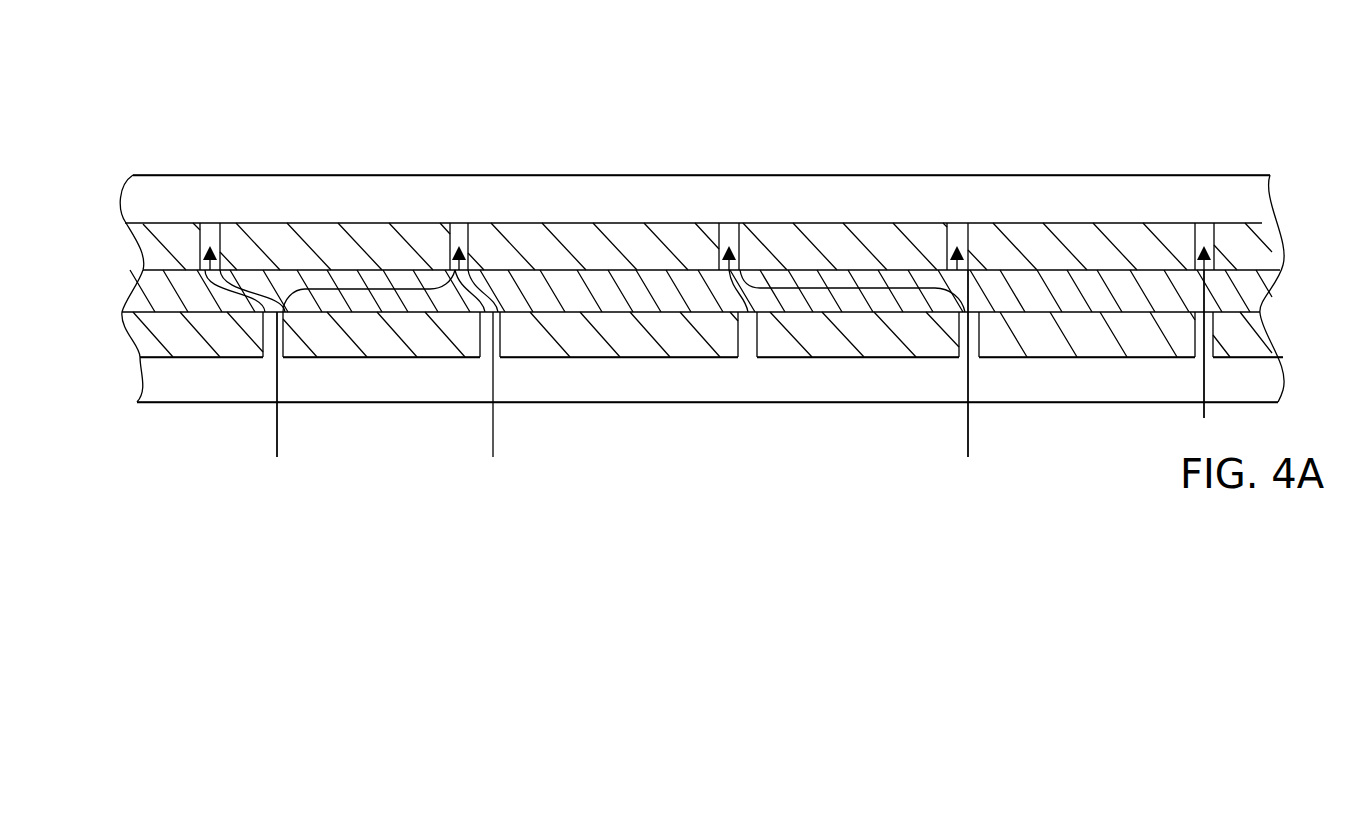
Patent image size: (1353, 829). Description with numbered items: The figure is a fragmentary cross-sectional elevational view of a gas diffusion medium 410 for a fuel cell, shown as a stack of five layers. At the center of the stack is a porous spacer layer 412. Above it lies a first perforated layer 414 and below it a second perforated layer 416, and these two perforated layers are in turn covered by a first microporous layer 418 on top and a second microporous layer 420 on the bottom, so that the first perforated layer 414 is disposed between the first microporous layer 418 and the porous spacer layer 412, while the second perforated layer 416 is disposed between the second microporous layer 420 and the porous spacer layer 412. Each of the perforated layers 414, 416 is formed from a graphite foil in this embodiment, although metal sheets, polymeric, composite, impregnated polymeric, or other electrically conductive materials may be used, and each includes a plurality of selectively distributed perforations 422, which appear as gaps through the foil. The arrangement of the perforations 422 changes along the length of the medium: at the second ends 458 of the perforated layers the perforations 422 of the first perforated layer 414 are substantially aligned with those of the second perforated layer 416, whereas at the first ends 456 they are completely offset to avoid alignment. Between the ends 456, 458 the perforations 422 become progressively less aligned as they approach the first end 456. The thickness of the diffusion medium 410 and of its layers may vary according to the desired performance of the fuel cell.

The diffusion medium 410 is at (1270, 132).
The porous spacer layer 412 is at (150, 285).
The first perforated layer 414 is at (145, 240).
The second perforated layer 416 is at (150, 330).
The first microporous layer 418 is at (150, 195).
The second microporous layer 420 is at (150, 378).
The perforations 422 is at (212, 238).
The first ends 456 is at (1210, 160).
The second ends 458 is at (186, 160).